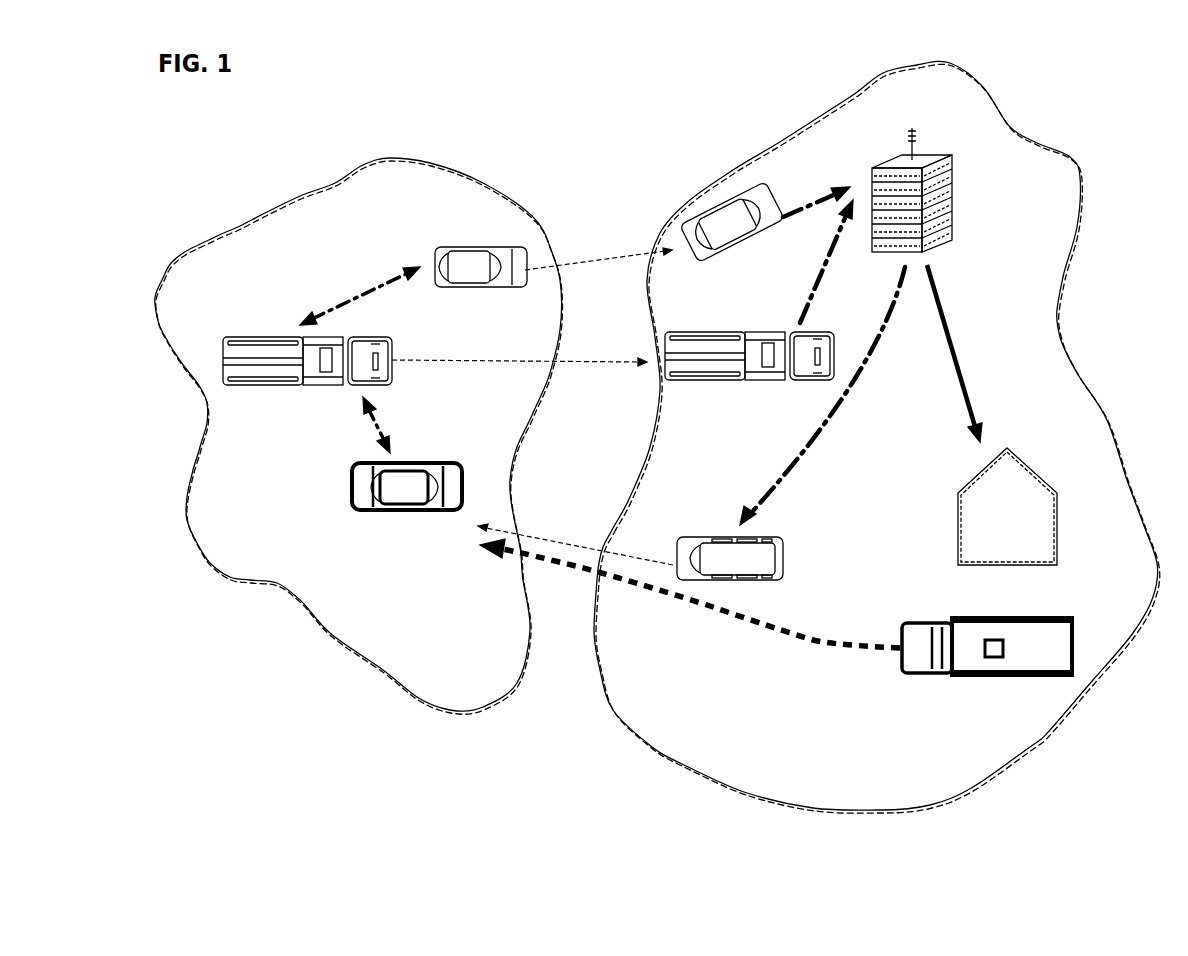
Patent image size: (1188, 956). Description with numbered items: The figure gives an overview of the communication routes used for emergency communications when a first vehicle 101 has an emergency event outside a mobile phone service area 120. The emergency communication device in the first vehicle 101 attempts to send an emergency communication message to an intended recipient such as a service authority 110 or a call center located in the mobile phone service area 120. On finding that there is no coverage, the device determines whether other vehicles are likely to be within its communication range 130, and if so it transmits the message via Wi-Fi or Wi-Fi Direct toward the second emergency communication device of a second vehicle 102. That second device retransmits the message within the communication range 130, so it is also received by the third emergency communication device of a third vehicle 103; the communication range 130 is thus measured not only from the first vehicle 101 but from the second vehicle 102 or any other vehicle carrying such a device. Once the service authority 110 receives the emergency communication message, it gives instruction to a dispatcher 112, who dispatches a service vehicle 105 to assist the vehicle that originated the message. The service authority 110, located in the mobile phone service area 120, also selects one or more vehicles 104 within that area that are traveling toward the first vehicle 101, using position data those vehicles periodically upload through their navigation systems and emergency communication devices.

The first vehicle 101 is at (397, 497).
The second vehicle 102 is at (307, 362).
The third vehicle 103 is at (468, 262).
The vehicles 104 is at (723, 567).
The service vehicle 105 is at (986, 660).
The service authority 110 is at (903, 160).
The dispatcher 112 is at (1015, 468).
The mobile phone service area 120 is at (610, 708).
The communication range 130 is at (332, 633).